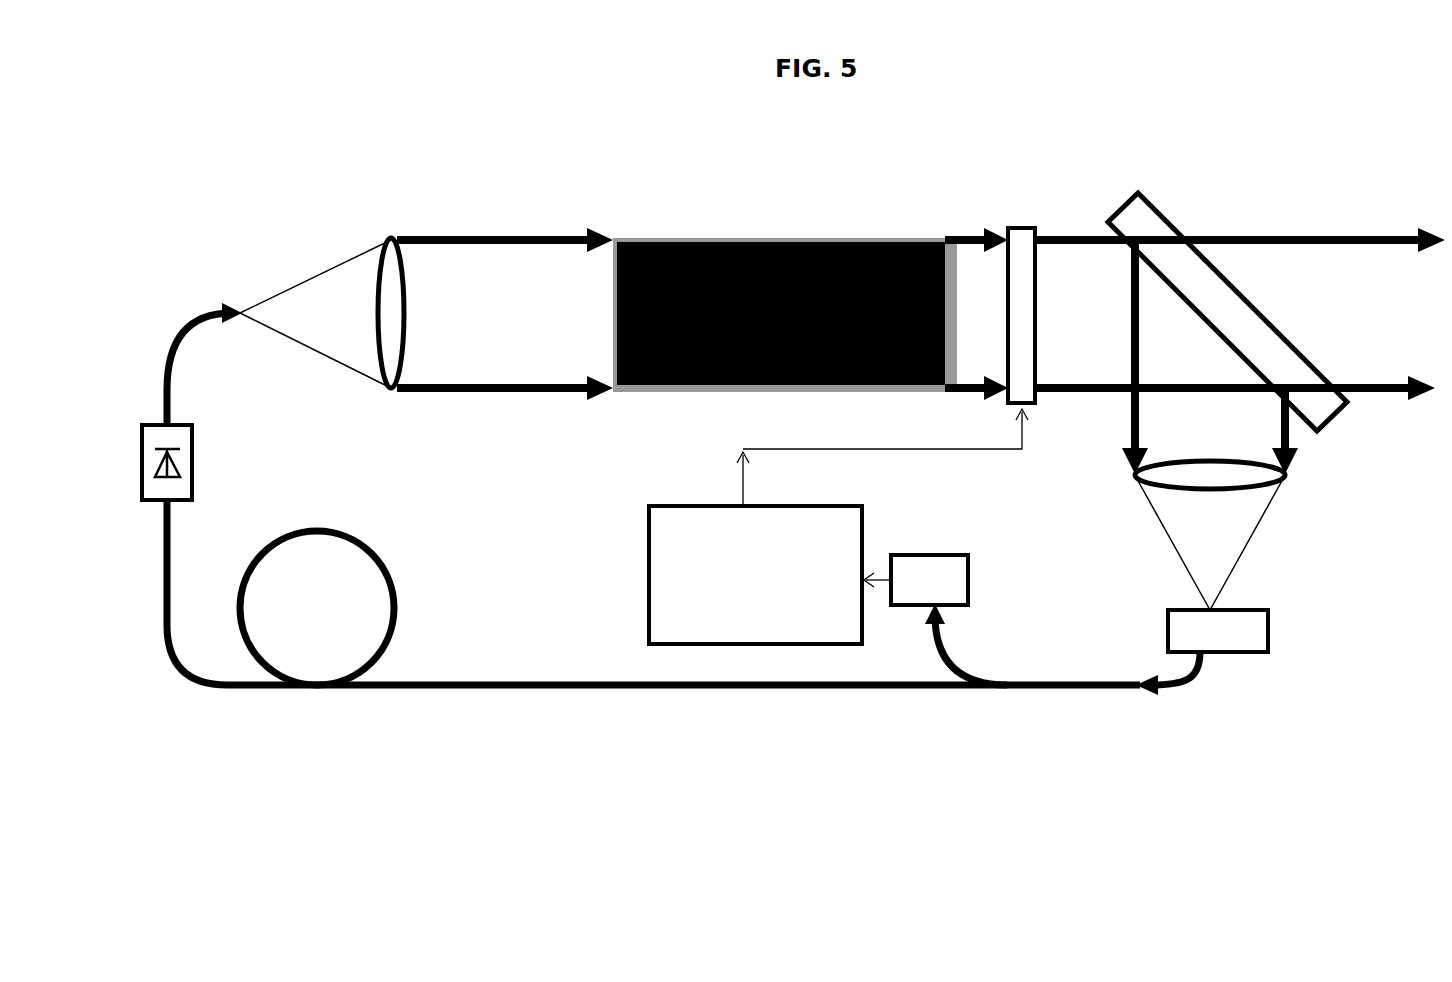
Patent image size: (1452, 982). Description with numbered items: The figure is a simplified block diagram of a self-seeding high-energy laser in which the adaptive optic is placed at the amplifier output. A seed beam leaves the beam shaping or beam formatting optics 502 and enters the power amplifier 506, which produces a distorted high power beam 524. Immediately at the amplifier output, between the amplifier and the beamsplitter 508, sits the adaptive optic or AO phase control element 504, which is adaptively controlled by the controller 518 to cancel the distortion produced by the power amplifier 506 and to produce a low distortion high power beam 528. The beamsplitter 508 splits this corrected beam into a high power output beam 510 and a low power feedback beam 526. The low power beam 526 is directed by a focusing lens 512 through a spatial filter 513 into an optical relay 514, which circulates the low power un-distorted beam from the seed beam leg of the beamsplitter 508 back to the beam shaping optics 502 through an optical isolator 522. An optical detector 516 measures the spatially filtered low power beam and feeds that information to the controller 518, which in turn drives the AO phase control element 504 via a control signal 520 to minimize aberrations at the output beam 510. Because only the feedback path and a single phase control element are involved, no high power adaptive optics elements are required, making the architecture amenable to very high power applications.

The beam shaping or beam formatting optics 502 is at (307, 280).
The adaptive optic (AO phase control element) 504 is at (1020, 228).
The power amplifier 506 is at (838, 240).
The beamsplitter 508 is at (1177, 228).
The high power output beam 510 is at (1240, 277).
The focusing lens 512 is at (1283, 473).
The spatial filter 513 is at (1270, 630).
The optical relay 514 is at (1040, 682).
The optical detector 516 is at (935, 555).
The controller 518 is at (649, 556).
The control signal 520 is at (743, 449).
The optical isolator 522 is at (192, 455).
The high power beam 524 is at (978, 372).
The low power (feedback) beam 526 is at (1163, 440).
The low distortion high power beam 528 is at (1102, 367).